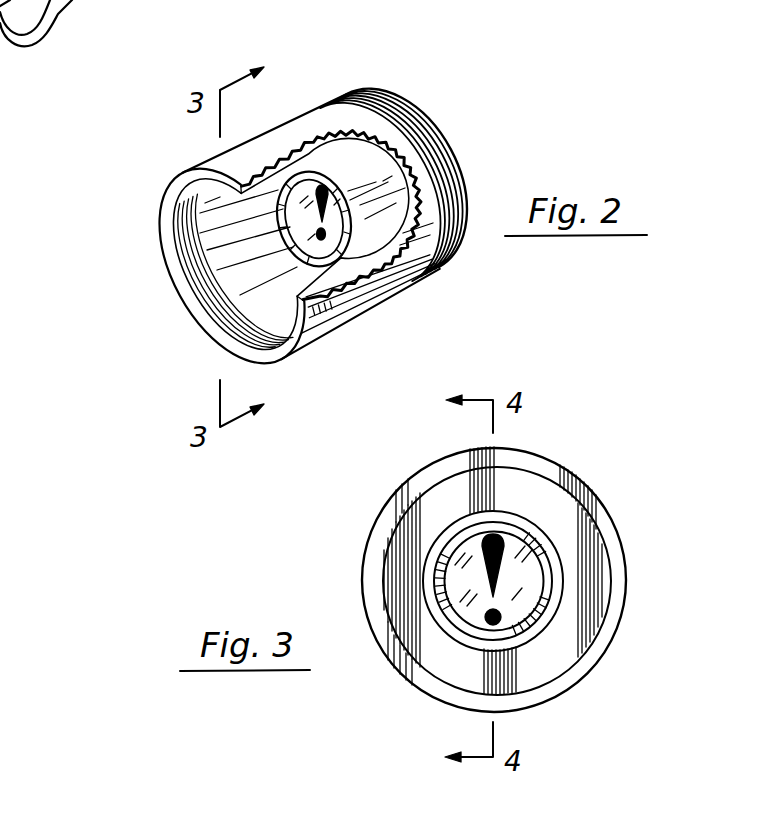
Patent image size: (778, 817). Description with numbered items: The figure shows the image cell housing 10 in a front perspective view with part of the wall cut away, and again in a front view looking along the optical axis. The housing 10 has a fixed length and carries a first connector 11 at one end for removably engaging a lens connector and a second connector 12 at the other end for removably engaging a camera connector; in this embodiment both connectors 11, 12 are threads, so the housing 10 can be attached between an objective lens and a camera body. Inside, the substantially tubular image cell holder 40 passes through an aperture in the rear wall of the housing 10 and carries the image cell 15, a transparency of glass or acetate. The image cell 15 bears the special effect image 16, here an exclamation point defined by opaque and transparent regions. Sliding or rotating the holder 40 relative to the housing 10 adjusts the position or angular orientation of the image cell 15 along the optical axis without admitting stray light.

In FIG. 2, the image cell housing 10 is at (142, 199).
In FIG. 3, the image cell housing 10 is at (590, 455).
In FIG. 2, the first connector 11 is at (187, 262).
In FIG. 2, the second connector 12 is at (437, 162).
In FIG. 2, the image cell holder 40 is at (345, 170).
In FIG. 3, the image cell holder 40 is at (538, 548).
In FIG. 2, the image cell 15 is at (330, 223).
In FIG. 3, the image cell 15 is at (525, 583).
In FIG. 2, the special effect image 16 is at (321, 238).
In FIG. 3, the special effect image 16 is at (500, 590).